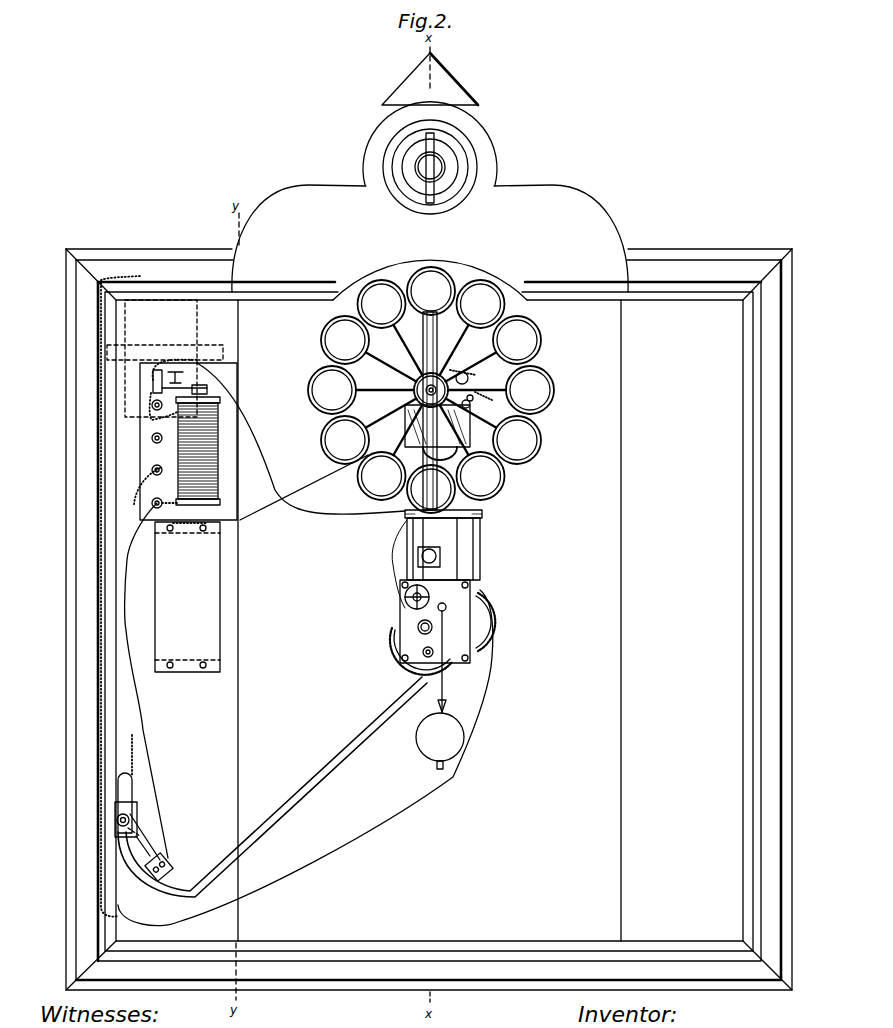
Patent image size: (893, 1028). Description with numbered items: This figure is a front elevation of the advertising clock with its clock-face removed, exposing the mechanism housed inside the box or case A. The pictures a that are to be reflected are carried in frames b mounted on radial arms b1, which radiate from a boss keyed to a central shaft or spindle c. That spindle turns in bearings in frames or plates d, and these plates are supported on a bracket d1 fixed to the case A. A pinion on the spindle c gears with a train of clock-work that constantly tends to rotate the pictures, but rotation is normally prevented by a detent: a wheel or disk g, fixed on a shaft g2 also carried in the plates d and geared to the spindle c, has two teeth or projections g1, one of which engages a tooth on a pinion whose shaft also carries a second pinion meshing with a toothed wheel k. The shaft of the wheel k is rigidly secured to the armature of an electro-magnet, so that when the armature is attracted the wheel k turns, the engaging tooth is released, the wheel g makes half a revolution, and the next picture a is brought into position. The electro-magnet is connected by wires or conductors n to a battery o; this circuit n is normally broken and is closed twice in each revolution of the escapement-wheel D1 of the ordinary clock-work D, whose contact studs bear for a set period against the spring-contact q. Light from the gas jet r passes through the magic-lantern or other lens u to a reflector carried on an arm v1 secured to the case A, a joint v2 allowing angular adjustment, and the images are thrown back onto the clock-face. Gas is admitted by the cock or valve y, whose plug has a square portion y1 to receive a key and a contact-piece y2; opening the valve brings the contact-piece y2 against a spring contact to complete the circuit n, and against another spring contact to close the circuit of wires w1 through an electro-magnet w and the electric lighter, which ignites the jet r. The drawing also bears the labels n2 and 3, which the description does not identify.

The box or case A is at (429, 521).
The pictures a is at (431, 390).
The frames b is at (322, 327).
The radial arms b1 is at (432, 390).
The shaft or spindle c is at (414, 390).
The frames or plates d is at (440, 411).
The bracket d1 is at (443, 545).
The train of clock-work D is at (400, 658).
The escapement-wheel D1 is at (405, 590).
The wheel or disk g is at (400, 612).
The teeth or projections g1 is at (479, 403).
The shaft or spindle g2 is at (464, 478).
The toothed wheel k is at (489, 401).
The wires or conductors n is at (100, 640).
The wire branch n2 is at (399, 564).
The battery o is at (172, 410).
The spring-contact q is at (400, 627).
The jet of gas r is at (411, 691).
The magic-lantern or other lens u is at (177, 441).
The arm v1 is at (434, 150).
The joint v2 is at (426, 180).
The electro-magnet w is at (270, 472).
The wires or conductors w1 is at (125, 622).
The cock or valve y is at (117, 820).
The square portion y1 is at (128, 818).
The contact-piece y2 is at (140, 830).
The contact block 3 is at (150, 850).